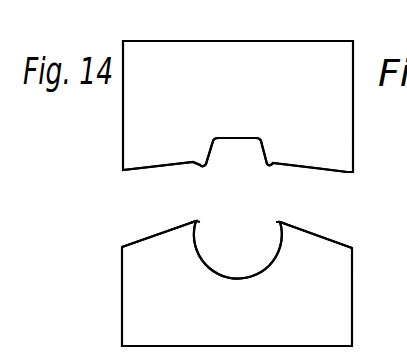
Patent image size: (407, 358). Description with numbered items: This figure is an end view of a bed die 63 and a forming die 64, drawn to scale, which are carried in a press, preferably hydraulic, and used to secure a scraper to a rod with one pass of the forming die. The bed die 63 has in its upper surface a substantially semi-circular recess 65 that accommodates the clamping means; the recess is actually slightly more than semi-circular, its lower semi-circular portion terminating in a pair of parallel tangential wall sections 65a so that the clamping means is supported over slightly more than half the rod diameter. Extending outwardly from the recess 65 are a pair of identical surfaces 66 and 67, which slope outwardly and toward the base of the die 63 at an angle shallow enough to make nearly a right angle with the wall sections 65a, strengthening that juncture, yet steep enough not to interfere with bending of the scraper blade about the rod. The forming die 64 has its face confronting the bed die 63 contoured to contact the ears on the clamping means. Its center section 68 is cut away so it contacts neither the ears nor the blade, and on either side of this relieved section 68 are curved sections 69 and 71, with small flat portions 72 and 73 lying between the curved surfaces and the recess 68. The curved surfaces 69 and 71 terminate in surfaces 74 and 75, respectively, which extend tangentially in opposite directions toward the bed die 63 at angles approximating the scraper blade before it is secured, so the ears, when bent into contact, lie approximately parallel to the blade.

The bed die 63 is at (135, 300).
The forming die 64 is at (233, 46).
The semi-circular recess 65 is at (238, 271).
The parallel tangential wall sections 65a is at (206, 218).
The surface 66 is at (343, 245).
The surface 67 is at (146, 238).
The center section 68 is at (233, 140).
The curved section 69 is at (284, 166).
The curved section 71 is at (190, 166).
The flat portion 72 is at (203, 168).
The flat portion 73 is at (271, 167).
The surface 74 is at (332, 174).
The surface 75 is at (135, 173).